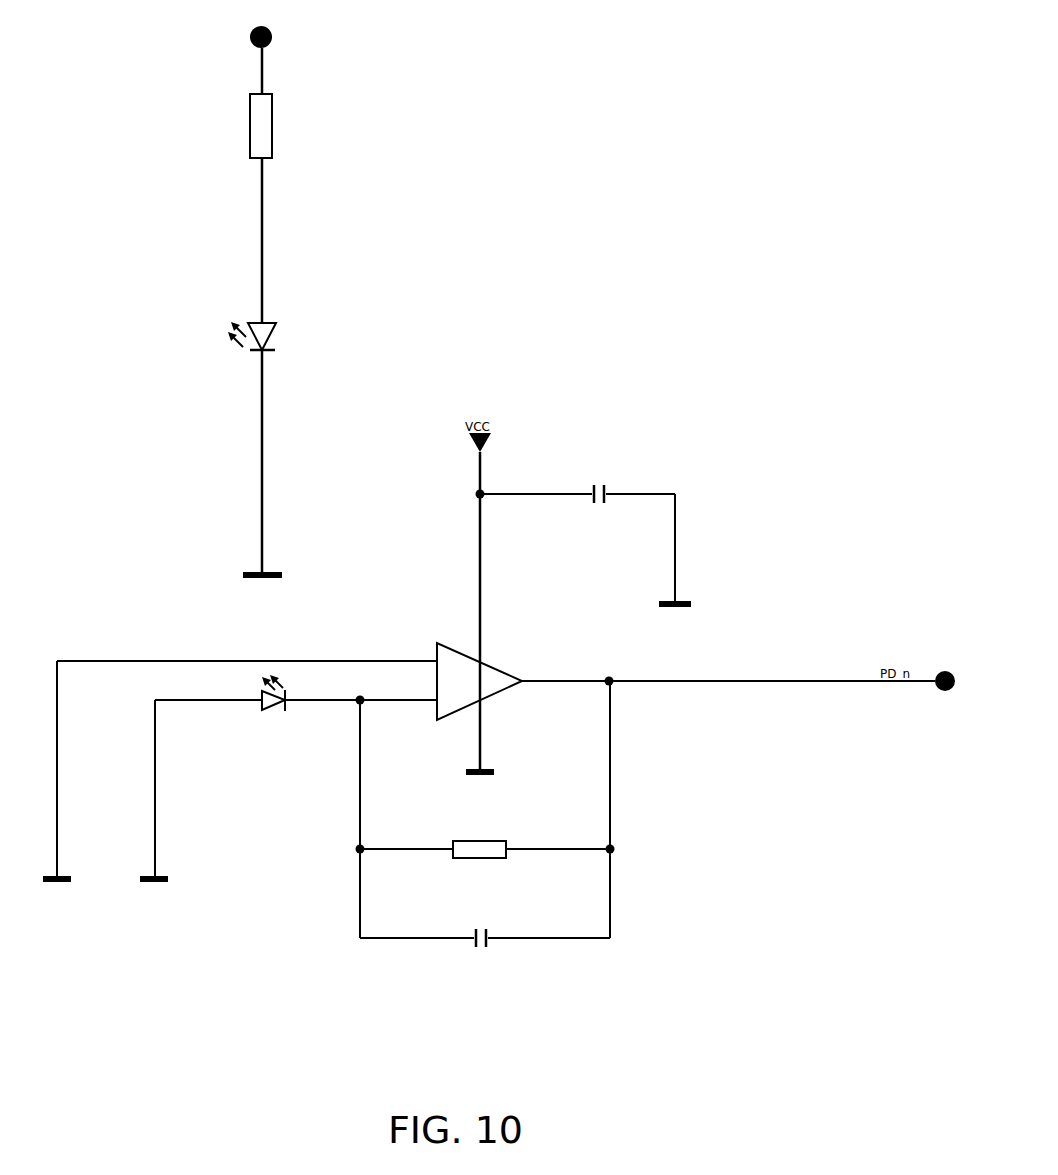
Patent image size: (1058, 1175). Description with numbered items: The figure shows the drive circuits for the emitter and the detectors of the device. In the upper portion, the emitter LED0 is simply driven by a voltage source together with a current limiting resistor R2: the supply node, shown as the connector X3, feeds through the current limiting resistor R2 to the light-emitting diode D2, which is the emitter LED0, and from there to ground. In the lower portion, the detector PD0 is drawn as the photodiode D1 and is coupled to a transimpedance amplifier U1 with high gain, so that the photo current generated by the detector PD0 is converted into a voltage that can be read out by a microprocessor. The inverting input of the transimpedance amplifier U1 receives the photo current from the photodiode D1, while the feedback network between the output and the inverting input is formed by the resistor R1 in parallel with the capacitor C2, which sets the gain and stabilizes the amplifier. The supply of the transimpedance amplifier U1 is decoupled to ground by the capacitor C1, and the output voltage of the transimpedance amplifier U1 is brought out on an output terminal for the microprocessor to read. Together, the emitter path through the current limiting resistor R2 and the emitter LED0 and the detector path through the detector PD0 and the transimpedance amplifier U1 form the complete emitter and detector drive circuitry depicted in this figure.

The connector Led_n X3 is at (283, 29).
The current limiting resistor R2 is at (267, 142).
The light emitting diode D2 is at (275, 331).
The emitter LED0 is at (284, 331).
The decoupling capacitor 1u 25V C1 is at (585, 542).
The transimpedance amplifier U1 is at (479, 701).
The photodiode D1 is at (283, 716).
The detector PD0 is at (275, 716).
The feedback resistor 100K R1 is at (485, 842).
The feedback capacitor 2p2 50V C2 is at (485, 945).